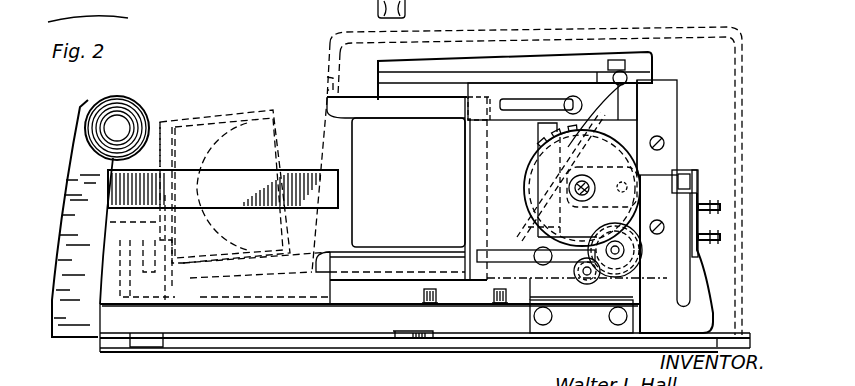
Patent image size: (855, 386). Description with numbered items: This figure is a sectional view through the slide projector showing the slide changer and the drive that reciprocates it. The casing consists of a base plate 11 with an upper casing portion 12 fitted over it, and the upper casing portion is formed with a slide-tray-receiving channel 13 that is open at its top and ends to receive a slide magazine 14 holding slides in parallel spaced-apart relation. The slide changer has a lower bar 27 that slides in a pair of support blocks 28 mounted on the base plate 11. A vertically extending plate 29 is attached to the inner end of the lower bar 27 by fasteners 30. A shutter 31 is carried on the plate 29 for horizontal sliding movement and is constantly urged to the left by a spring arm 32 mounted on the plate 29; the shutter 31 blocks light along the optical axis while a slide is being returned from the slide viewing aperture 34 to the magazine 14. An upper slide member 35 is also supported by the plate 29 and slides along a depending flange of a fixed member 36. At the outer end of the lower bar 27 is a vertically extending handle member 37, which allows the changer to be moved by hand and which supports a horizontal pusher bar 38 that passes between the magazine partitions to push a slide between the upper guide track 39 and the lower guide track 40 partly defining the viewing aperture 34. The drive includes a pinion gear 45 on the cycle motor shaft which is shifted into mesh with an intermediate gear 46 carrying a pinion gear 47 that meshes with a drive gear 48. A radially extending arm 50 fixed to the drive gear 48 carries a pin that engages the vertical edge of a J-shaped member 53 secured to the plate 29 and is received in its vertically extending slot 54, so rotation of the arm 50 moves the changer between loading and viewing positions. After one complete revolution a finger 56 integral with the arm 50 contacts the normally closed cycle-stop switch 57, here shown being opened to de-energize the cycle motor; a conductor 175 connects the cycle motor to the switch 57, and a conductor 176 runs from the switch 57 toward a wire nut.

The base plate 11 is at (372, 338).
The upper casing portion 12 is at (641, 27).
The slide-tray-receiving channel 13 is at (253, 103).
The slide magazine 14 is at (203, 123).
The lower bar 27 is at (296, 326).
The support blocks 28 is at (152, 340).
The vertically extending plate 29 is at (627, 97).
The fasteners 30 is at (543, 322).
The shutter 31 is at (472, 140).
The spring arm 32 is at (597, 108).
The slide viewing aperture 34 is at (352, 167).
The upper slide member 35 is at (540, 82).
The member 36 is at (378, 66).
The handle member 37 is at (68, 184).
The pusher bar 38 is at (297, 180).
The upper guide track 39 is at (409, 108).
The lower guide track 40 is at (413, 262).
The pinion gear 45 is at (580, 276).
The intermediate gear 46 is at (610, 283).
The pinion gear 47 is at (640, 252).
The drive gear 48 is at (665, 143).
The radially extending arm 50 is at (647, 182).
The J-shaped member 53 is at (663, 92).
The vertically extending slot 54 is at (688, 305).
The finger 56 is at (703, 190).
The cycle-stop switch 57 is at (716, 163).
The conductor 175 is at (720, 207).
The conductor 176 is at (720, 237).